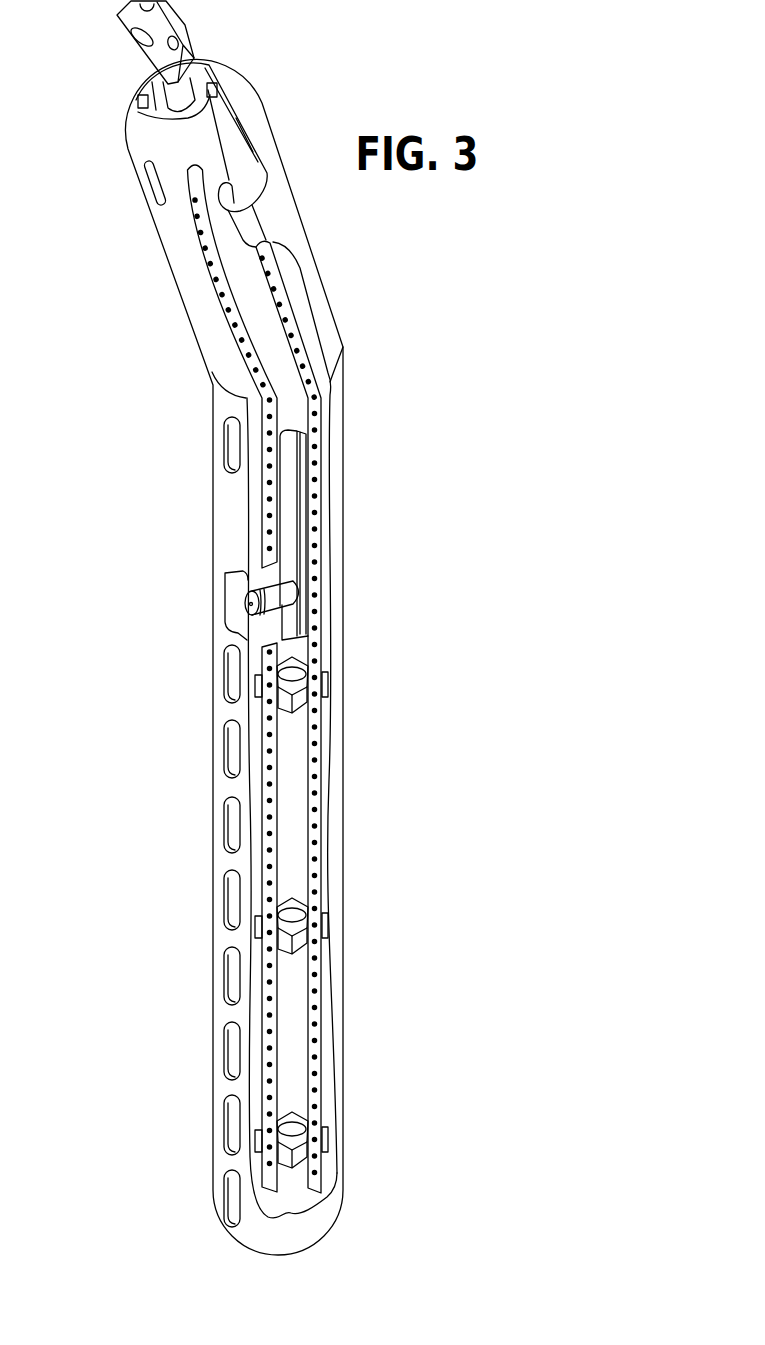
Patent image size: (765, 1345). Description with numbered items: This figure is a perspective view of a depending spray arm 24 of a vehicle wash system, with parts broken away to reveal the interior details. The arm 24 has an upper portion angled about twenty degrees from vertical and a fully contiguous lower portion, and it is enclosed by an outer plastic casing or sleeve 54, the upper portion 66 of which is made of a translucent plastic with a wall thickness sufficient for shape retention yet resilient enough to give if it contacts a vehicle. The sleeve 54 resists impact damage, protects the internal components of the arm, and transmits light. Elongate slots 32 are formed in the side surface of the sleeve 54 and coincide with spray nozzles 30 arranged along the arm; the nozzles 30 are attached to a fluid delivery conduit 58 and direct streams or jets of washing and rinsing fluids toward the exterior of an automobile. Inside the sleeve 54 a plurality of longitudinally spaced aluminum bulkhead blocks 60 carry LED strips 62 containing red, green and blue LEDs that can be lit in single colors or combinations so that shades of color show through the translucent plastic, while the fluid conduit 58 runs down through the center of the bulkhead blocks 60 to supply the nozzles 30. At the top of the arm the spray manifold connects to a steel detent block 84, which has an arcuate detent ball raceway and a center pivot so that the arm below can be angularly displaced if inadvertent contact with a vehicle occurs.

The spray arm 24 is at (350, 566).
The spray nozzle 30 is at (247, 606).
The elongate slot 32 is at (222, 972).
The sleeve 54 is at (343, 752).
The fluid delivery conduit 58 is at (290, 448).
The bulkhead block 60 is at (287, 698).
The LED strip 62 is at (270, 513).
The upper portion of sleeve 66 is at (169, 260).
The detent block 84 is at (122, 28).